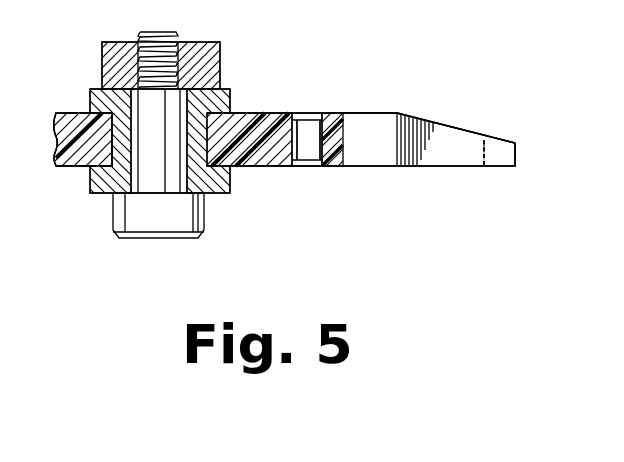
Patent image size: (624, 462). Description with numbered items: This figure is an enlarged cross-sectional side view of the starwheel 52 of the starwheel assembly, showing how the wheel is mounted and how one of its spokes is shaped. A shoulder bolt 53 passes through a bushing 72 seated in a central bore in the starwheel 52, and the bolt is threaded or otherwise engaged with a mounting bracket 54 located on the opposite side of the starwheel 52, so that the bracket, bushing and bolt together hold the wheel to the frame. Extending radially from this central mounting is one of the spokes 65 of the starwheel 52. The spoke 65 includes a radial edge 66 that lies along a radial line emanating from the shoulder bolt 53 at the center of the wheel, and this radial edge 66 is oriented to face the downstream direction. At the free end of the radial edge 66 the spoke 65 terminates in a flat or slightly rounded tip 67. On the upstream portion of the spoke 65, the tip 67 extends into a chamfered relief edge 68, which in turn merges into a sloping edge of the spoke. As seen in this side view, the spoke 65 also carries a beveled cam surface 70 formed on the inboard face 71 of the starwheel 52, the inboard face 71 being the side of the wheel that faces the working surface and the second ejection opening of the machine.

The starwheel 52 is at (368, 168).
The shoulder bolt 53 is at (196, 232).
The mounting bracket 54 is at (102, 42).
The spoke 65 is at (365, 113).
The radial edge 66 is at (393, 157).
The tip 67 is at (516, 152).
The chamfered relief edge 68 is at (497, 152).
The beveled cam surface 70 is at (441, 125).
The inboard face 71 is at (283, 113).
The bushing 72 is at (226, 102).